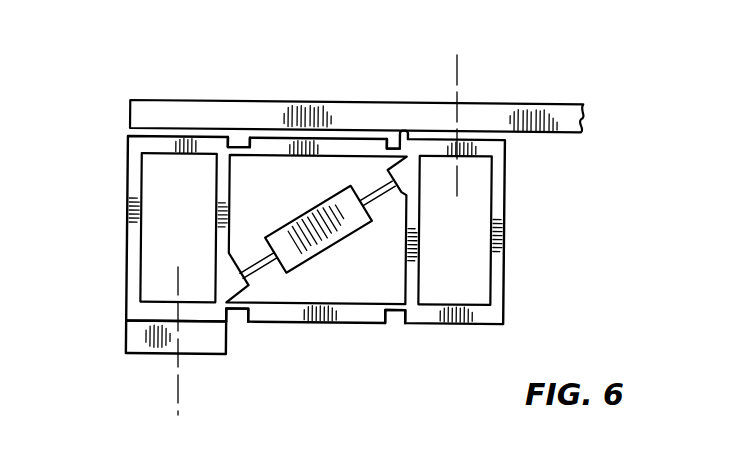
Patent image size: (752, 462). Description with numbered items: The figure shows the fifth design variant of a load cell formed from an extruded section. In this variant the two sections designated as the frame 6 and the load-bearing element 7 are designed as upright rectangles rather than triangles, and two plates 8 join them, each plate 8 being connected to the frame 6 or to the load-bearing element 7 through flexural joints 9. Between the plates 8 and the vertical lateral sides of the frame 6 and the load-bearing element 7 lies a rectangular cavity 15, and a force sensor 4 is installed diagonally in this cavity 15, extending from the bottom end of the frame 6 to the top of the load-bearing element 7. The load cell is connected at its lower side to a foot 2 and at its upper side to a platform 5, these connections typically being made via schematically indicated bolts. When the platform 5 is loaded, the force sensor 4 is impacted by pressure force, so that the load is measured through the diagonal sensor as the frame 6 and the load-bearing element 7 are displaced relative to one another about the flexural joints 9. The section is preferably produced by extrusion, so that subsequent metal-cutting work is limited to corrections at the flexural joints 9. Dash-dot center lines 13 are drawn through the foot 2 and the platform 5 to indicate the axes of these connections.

The foot 2 is at (135, 333).
The force sensor 4 is at (297, 218).
The platform 5 is at (585, 115).
The frame 6 is at (133, 312).
The load-bearing element 7 is at (490, 147).
The plate 8 is at (331, 146).
The flexural joint 9 is at (240, 146).
The center line 13 is at (457, 103).
The cavity 15 is at (392, 244).